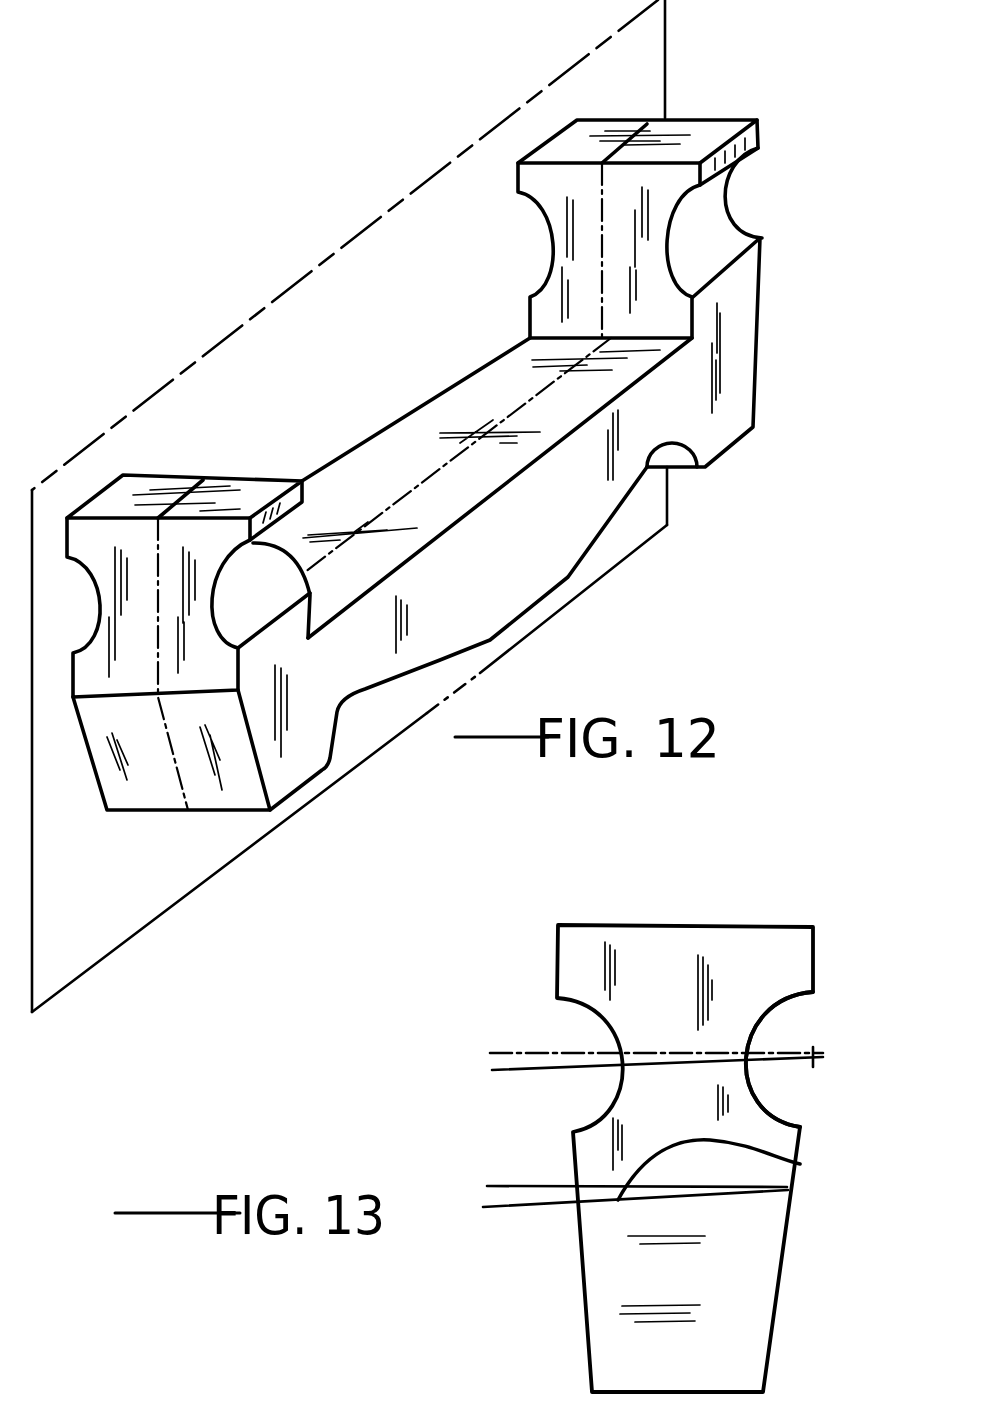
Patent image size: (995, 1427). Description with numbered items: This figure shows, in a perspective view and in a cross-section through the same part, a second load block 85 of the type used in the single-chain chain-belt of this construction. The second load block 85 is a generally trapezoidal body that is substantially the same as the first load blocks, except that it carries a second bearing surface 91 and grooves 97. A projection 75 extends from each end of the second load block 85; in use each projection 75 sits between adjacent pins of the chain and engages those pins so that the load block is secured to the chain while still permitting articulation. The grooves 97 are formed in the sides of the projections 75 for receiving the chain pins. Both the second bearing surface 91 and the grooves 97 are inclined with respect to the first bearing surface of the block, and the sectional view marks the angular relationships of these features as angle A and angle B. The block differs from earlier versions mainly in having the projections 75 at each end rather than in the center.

In FIG. 12, the second load block 85 is at (457, 421).
In FIG. 12, the projection 75 is at (533, 186).
In FIG. 12, the groove 97 is at (720, 213).
In FIG. 13, the groove 97 is at (775, 1023).
In FIG. 12, the second bearing surface 91 is at (418, 454).
In FIG. 13, the second bearing surface 91 is at (800, 1164).
In FIG. 13, the angle A is at (535, 1245).
In FIG. 13, the angle B is at (527, 1013).